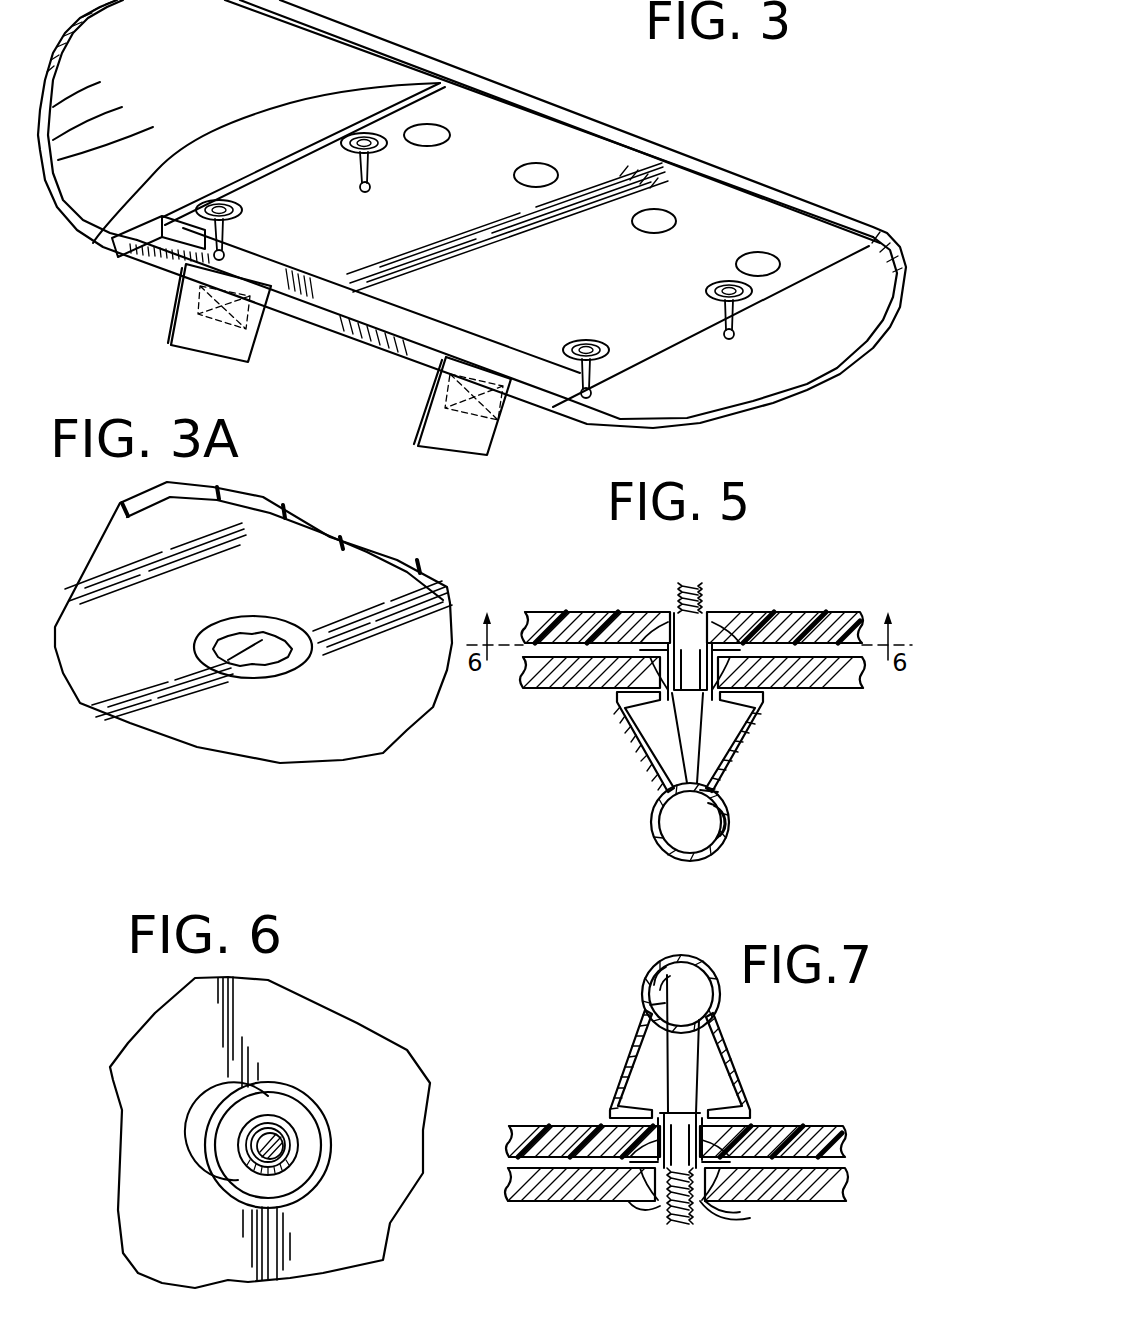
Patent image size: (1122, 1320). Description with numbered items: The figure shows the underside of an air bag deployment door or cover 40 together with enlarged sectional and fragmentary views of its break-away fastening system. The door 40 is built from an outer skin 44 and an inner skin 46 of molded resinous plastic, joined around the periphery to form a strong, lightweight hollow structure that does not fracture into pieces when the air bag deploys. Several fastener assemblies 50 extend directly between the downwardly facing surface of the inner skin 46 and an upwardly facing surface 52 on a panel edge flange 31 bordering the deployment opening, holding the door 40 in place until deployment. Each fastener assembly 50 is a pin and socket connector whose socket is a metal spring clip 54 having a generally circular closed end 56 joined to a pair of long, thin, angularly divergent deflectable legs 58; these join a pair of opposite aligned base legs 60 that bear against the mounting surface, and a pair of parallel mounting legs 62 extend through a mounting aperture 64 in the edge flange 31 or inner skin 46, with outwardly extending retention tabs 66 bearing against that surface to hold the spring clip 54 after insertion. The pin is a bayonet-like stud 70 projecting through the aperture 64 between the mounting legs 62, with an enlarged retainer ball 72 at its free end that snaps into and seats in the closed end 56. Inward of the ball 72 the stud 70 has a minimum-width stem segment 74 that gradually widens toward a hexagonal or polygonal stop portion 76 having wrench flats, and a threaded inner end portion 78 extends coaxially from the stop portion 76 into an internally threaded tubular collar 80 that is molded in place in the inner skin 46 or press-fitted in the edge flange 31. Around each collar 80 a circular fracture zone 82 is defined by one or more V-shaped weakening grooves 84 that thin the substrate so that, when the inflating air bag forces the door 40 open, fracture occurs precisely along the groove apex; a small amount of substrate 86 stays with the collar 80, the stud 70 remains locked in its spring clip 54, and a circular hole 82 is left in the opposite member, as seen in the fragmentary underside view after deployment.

In FIG. 5, the panel edge flange 31 is at (530, 680).
In FIG. 7, the panel edge flange 31 is at (525, 1190).
In FIG. 3, the door or cover 40 is at (337, 337).
In FIG. 3, the outer skin 44 is at (60, 226).
In FIG. 3, the inner skin 46 is at (327, 241).
In FIG. 3A, the inner skin 46 is at (316, 714).
In FIG. 5, the inner skin 46 is at (835, 612).
In FIG. 6, the inner skin 46 is at (168, 1226).
In FIG. 7, the inner skin 46 is at (800, 1125).
In FIG. 5, the fastener assembly 50 is at (602, 737).
In FIG. 7, the fastener assembly 50 is at (608, 1053).
In FIG. 5, the upwardly facing surface 52 is at (577, 611).
In FIG. 7, the upwardly facing surface 52 is at (530, 1126).
In FIG. 5, the spring clip 54 is at (716, 749).
In FIG. 7, the spring clip 54 is at (703, 1047).
In FIG. 5, the closed end 56 is at (660, 845).
In FIG. 7, the closed end 56 is at (700, 960).
In FIG. 5, the deflectable legs 58 is at (770, 738).
In FIG. 7, the deflectable legs 58 is at (640, 1030).
In FIG. 5, the base legs 60 is at (745, 715).
In FIG. 7, the base legs 60 is at (660, 1125).
In FIG. 5, the mounting legs 62 is at (640, 615).
In FIG. 7, the mounting legs 62 is at (585, 1135).
In FIG. 5, the mounting aperture 64 is at (665, 670).
In FIG. 7, the mounting aperture 64 is at (735, 1132).
In FIG. 5, the retention tabs 66 is at (620, 612).
In FIG. 7, the retention tabs 66 is at (630, 1195).
In FIG. 3, the stud 70 is at (224, 232).
In FIG. 5, the stud 70 is at (688, 738).
In FIG. 7, the stud 70 is at (690, 1061).
In FIG. 3, the retainer ball 72 is at (214, 258).
In FIG. 5, the retainer ball 72 is at (718, 822).
In FIG. 7, the retainer ball 72 is at (681, 970).
In FIG. 5, the stem segment 74 is at (712, 792).
In FIG. 6, the stem segment 74 is at (290, 1128).
In FIG. 7, the stem segment 74 is at (660, 965).
In FIG. 5, the stop portion 76 is at (694, 655).
In FIG. 7, the stop portion 76 is at (668, 1150).
In FIG. 5, the threaded inner end portion 78 is at (690, 583).
In FIG. 7, the threaded inner end portion 78 is at (678, 1226).
In FIG. 3, the tubular collar 80 is at (220, 200).
In FIG. 5, the tubular collar 80 is at (665, 610).
In FIG. 6, the tubular collar 80 is at (285, 1157).
In FIG. 7, the tubular collar 80 is at (653, 1200).
In FIG. 3, the fracture zone 82 is at (238, 210).
In FIG. 3A, the fracture zone 82 is at (230, 660).
In FIG. 5, the fracture zone 82 is at (737, 615).
In FIG. 6, the fracture zone 82 is at (300, 1170).
In FIG. 7, the fracture zone 82 is at (640, 1190).
In FIG. 3, the weakening grooves 84 is at (200, 210).
In FIG. 6, the weakening grooves 84 is at (300, 1100).
In FIG. 7, the weakening grooves 84 is at (720, 1210).
In FIG. 3A, the substrate 86 is at (285, 630).
In FIG. 6, the substrate 86 is at (258, 1135).
In FIG. 7, the substrate 86 is at (655, 1205).